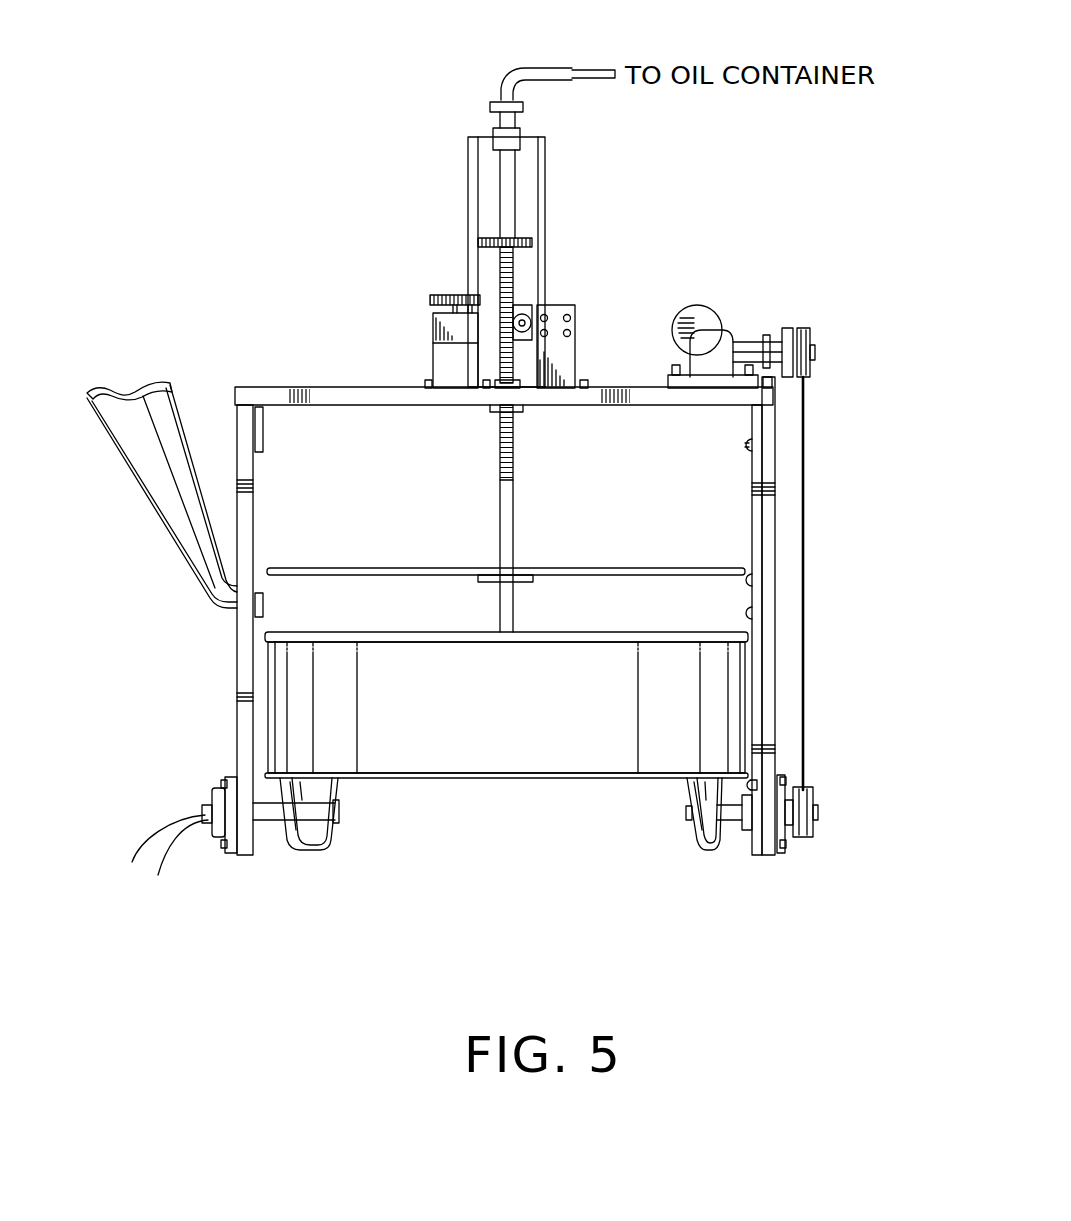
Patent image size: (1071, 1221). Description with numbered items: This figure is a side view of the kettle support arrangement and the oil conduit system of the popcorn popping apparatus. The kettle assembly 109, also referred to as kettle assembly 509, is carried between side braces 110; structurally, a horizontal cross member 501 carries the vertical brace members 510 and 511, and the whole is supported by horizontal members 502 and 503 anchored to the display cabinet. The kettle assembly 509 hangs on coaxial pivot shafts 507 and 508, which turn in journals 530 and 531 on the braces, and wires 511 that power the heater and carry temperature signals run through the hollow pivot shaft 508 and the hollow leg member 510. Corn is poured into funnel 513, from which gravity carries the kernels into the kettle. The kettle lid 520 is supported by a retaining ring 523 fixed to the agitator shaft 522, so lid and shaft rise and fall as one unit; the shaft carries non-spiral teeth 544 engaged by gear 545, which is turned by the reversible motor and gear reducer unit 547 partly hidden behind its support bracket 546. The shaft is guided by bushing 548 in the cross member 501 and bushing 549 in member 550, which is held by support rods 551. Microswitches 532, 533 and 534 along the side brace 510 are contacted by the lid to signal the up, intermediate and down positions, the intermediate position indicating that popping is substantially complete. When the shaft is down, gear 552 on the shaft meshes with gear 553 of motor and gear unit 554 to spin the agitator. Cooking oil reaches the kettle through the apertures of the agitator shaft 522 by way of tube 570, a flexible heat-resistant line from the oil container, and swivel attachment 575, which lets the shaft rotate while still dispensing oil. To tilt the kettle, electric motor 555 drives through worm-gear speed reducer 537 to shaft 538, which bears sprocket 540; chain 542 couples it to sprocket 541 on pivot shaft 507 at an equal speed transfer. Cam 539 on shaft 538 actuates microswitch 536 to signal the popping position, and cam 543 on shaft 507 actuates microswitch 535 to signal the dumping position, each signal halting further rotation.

The kettle assembly 109 is at (513, 780).
The side braces 110 is at (255, 512).
The horizontal cross member 501 is at (258, 390).
The horizontal member 502 is at (264, 418).
The horizontal member 503 is at (752, 420).
The pivot shaft 507 is at (730, 823).
The hollow pivot shaft 508 is at (262, 822).
The kettle assembly 509 is at (700, 842).
The vertical brace member 510 is at (312, 852).
The wires 511 is at (202, 812).
The funnel 513 is at (180, 562).
The kettle lid 520 is at (620, 567).
The agitator shaft 522 is at (500, 520).
The retaining ring 523 is at (535, 582).
The journal 530 is at (790, 842).
The journal 531 is at (214, 835).
The microswitch 532 is at (757, 445).
The actuating microswitch 533 is at (750, 580).
The sensor 534 is at (749, 613).
The microswitch 535 is at (760, 783).
The microswitch 536 is at (776, 390).
The worm-gear speed reducer 537 is at (745, 350).
The shaft 538 is at (766, 338).
The cam 539 is at (786, 335).
The sprocket 540 is at (810, 333).
The sprocket 541 is at (814, 803).
The chain 542 is at (806, 575).
The cam 543 is at (748, 832).
The teeth 544 is at (515, 462).
The gear 545 is at (560, 308).
The support bracket 546 is at (570, 360).
The reversible electric motor and gear reducer unit 547 is at (530, 310).
The bushing 548 is at (492, 412).
The bushing 549 is at (490, 106).
The member 550 is at (493, 136).
The support rods 551 is at (468, 180).
The gear 552 is at (478, 242).
The gear 553 is at (430, 300).
The motor and gear unit 554 is at (433, 350).
The electric motor 555 is at (702, 322).
The tube 570 is at (600, 78).
The swivel attachment 575 is at (532, 66).